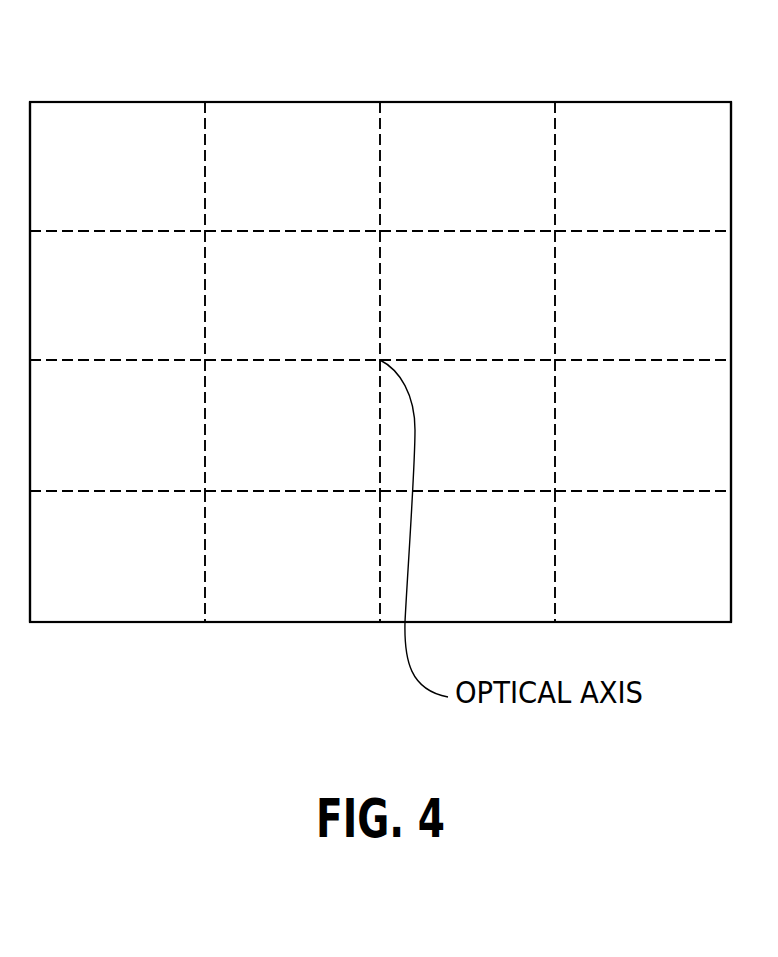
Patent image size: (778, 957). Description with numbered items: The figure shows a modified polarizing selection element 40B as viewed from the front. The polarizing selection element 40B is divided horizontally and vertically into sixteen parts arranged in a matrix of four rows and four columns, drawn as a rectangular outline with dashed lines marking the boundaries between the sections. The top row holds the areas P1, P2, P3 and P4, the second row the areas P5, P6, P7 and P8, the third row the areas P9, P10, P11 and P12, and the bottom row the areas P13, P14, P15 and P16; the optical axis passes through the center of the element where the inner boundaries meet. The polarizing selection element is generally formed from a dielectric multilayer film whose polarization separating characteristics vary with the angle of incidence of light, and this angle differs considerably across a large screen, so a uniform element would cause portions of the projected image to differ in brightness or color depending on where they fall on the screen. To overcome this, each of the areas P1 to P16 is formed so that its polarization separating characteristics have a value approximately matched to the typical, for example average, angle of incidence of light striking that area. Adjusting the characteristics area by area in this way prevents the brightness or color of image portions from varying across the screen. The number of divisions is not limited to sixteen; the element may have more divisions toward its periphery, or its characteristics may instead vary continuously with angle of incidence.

The polarizing selection element 40B is at (402, 58).
The area P1 is at (117, 166).
The area P2 is at (292, 166).
The area P3 is at (467, 166).
The area P4 is at (643, 166).
The area P5 is at (117, 295).
The area P6 is at (292, 295).
The area P7 is at (467, 295).
The area P8 is at (643, 295).
The area P9 is at (117, 425).
The area P10 is at (292, 425).
The area P11 is at (467, 425).
The area P12 is at (643, 425).
The area P13 is at (117, 556).
The area P14 is at (292, 556).
The area P15 is at (467, 556).
The area P16 is at (643, 556).